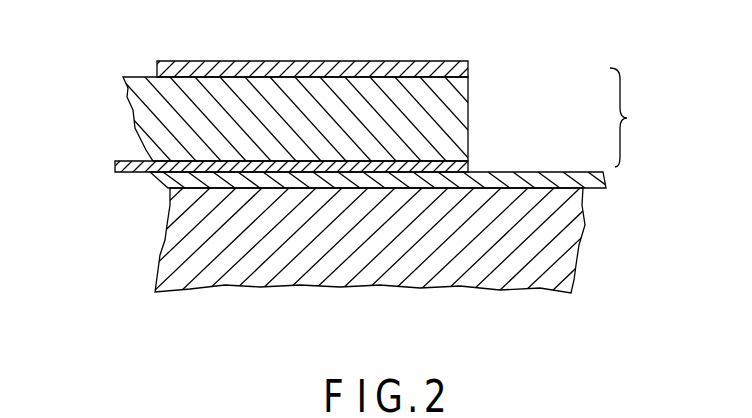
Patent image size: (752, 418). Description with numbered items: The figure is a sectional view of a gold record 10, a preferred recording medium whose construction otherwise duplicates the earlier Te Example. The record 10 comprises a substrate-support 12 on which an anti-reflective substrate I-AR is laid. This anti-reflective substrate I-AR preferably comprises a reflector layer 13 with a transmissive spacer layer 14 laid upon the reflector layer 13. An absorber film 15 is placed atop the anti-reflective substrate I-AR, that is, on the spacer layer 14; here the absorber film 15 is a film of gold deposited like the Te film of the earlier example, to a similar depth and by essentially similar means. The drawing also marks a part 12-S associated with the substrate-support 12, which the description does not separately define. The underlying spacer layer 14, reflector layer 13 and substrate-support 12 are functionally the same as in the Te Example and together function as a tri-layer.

The gold record 10 is at (562, 58).
The substrate-support 12 is at (275, 268).
The substrate surface layer 12-S is at (155, 184).
The reflector layer 13 is at (123, 160).
The transmissive spacer layer 14 is at (147, 103).
The absorber film 15 is at (176, 64).
The anti-reflective substrate I-AR is at (655, 117).